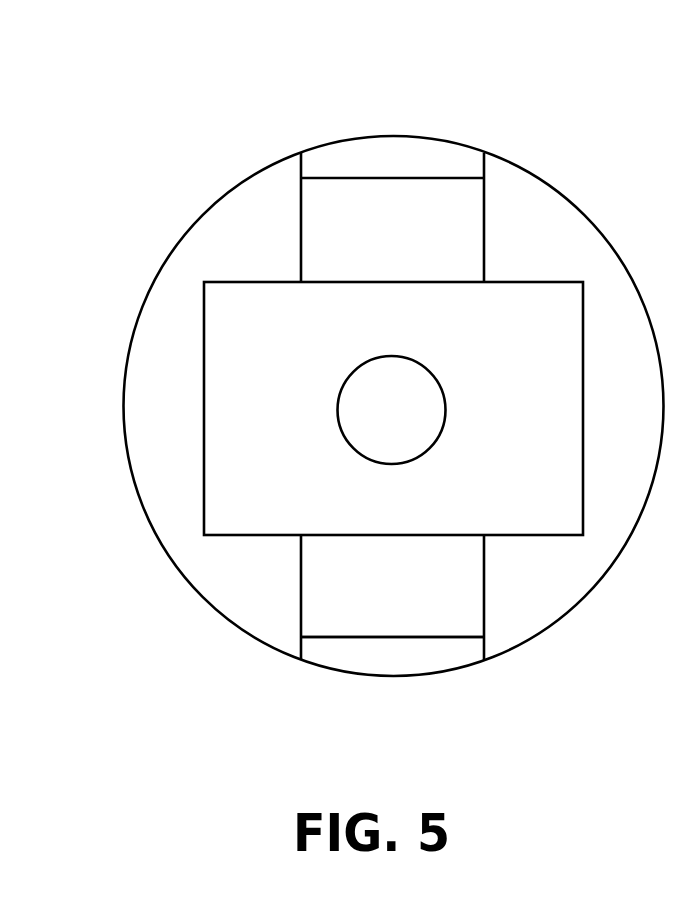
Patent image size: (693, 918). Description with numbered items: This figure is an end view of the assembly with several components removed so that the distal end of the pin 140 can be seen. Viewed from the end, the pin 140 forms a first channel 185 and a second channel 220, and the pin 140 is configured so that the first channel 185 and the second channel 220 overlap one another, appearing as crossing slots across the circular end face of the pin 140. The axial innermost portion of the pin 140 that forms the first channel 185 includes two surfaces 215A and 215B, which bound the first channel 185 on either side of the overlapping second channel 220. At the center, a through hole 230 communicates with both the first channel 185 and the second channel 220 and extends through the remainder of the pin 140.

The pin 140 is at (225, 197).
The second channel 220 is at (240, 442).
The through hole 230 is at (418, 375).
The surface 215A is at (437, 208).
The surface 215B is at (437, 585).
The first channel 185 is at (402, 635).